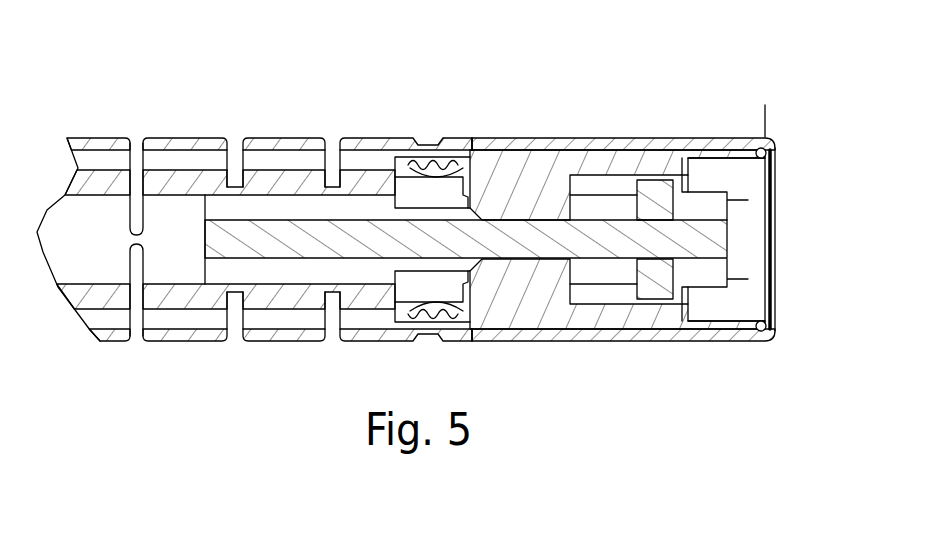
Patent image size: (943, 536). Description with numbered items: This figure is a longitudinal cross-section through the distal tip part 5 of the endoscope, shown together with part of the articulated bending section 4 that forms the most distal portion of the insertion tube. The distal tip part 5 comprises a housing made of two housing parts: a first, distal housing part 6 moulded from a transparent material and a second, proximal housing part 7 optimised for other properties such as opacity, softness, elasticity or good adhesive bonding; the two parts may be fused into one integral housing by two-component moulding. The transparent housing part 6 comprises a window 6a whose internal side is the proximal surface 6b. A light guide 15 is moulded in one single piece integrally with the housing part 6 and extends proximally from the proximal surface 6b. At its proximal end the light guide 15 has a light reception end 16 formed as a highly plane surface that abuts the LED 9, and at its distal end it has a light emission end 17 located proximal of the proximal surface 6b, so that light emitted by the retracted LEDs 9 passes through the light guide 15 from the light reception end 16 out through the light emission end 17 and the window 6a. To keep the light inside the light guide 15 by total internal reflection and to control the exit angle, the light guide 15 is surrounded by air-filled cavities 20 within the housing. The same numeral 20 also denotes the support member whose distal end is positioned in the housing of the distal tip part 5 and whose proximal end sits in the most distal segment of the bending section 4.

The articulated bending section 4 is at (203, 137).
The distal tip part 5 is at (526, 236).
The first housing part 6 is at (744, 150).
The window 6a is at (790, 156).
The proximal surface 6b is at (760, 190).
The second housing part 7 is at (532, 342).
The LEDs 9 is at (700, 162).
The light guide 15 is at (766, 152).
The light reception end 16 is at (720, 187).
The light emission end 17 is at (772, 170).
The cavities 20 is at (511, 135).